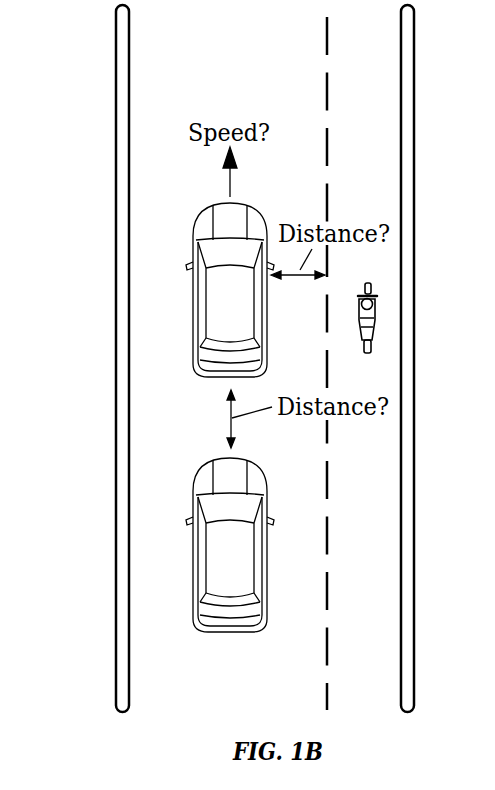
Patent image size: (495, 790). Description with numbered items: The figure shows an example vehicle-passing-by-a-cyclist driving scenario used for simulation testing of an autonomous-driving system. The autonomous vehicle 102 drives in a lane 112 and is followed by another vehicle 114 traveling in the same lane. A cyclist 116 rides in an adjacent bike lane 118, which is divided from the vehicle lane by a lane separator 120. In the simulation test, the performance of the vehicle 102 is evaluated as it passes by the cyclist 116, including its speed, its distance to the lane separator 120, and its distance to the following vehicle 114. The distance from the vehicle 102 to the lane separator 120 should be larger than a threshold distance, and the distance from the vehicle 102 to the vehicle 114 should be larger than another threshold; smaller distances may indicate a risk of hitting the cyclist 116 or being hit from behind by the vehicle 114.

The vehicle 102 is at (193, 295).
The lane 112 is at (250, 698).
The vehicle 114 is at (193, 551).
The cyclist 116 is at (375, 318).
The bike lane 118 is at (388, 698).
The lane separator 120 is at (326, 40).